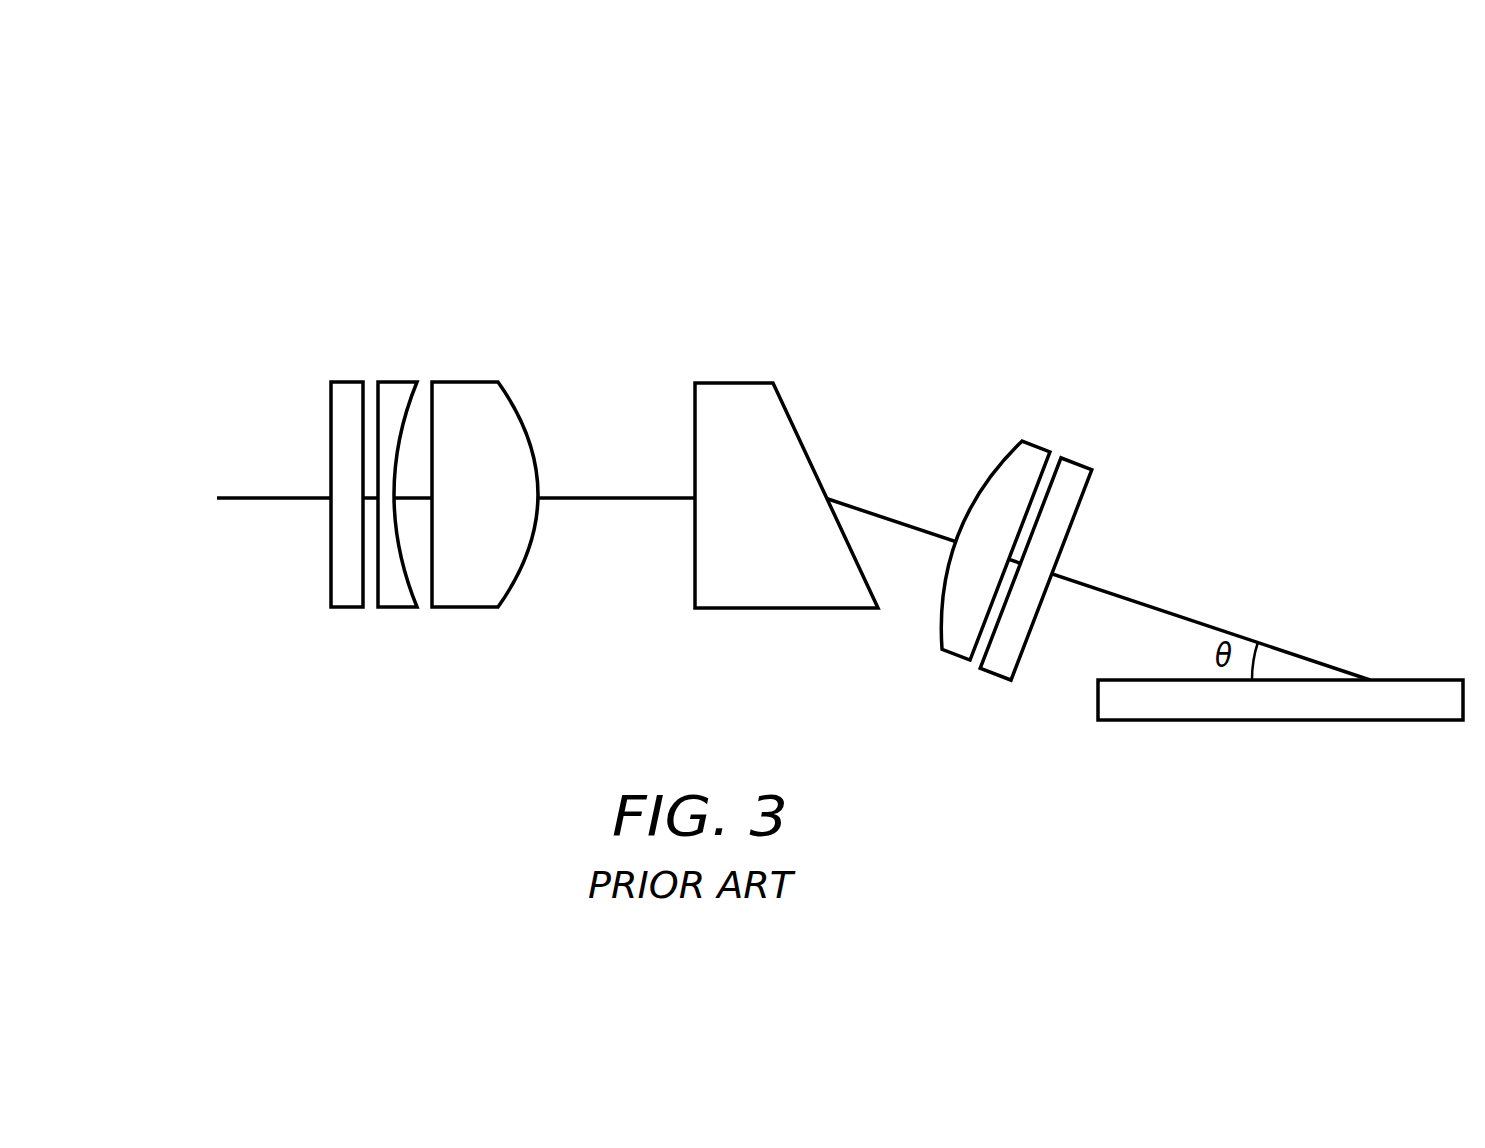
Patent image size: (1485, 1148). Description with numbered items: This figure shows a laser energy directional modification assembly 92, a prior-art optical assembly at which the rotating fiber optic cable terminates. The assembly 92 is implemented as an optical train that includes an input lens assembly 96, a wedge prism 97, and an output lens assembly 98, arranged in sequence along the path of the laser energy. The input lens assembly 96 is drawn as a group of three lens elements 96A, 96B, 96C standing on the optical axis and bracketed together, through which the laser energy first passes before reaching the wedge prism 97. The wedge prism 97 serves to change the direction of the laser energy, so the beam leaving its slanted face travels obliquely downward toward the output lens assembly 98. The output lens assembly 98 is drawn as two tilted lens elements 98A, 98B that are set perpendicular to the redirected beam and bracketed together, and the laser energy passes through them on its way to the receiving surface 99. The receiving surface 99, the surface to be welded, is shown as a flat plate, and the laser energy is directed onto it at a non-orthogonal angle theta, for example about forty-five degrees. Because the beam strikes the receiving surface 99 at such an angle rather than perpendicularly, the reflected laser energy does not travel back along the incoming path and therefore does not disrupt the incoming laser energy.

The laser energy directional modification assembly 92 is at (793, 408).
The input lens assembly 96 is at (403, 478).
The first lens element 96A is at (304, 457).
The second lens element 96B is at (362, 433).
The third lens element 96C is at (497, 446).
The wedge prism 97 is at (783, 527).
The output lens assembly 98 is at (1054, 563).
The plano-convex lens element 98A is at (974, 525).
The plate lens element 98B is at (1095, 569).
The receiving surface 99 is at (1280, 729).